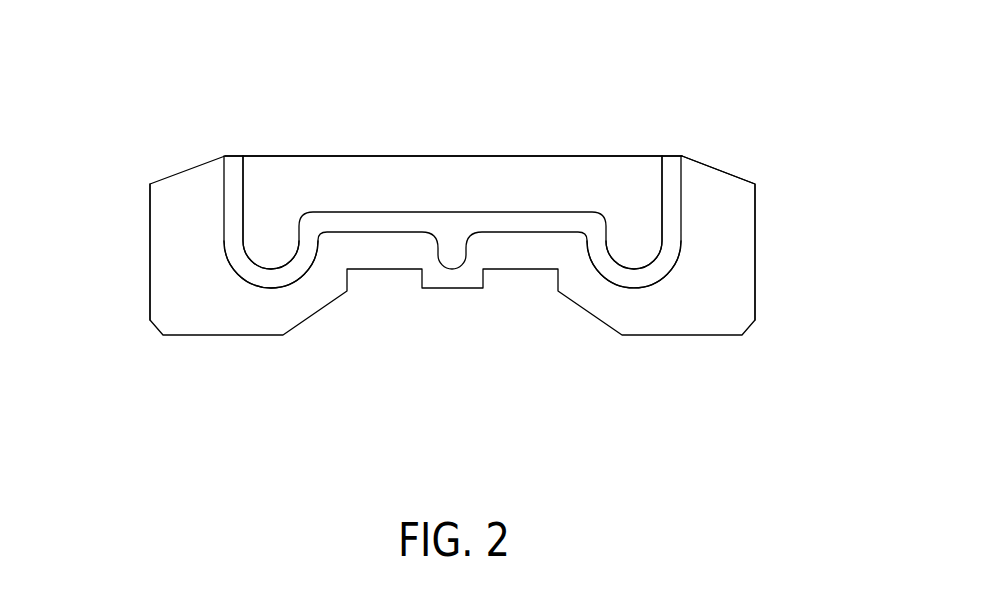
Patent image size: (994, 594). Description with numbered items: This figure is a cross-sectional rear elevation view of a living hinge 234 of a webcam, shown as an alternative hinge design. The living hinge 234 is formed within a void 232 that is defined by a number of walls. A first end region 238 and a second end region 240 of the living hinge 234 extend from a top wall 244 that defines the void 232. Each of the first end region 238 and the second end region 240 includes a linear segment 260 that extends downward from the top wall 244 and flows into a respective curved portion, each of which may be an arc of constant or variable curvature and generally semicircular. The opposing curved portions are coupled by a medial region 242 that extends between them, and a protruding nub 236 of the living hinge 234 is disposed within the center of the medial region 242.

The void 232 is at (322, 187).
The living hinge 234 is at (198, 191).
The protruding nub 236 is at (451, 258).
The first end region 238 is at (277, 201).
The second end region 240 is at (625, 203).
The medial region 242 is at (436, 186).
The top wall 244 is at (528, 156).
The linear segment 260 is at (682, 185).